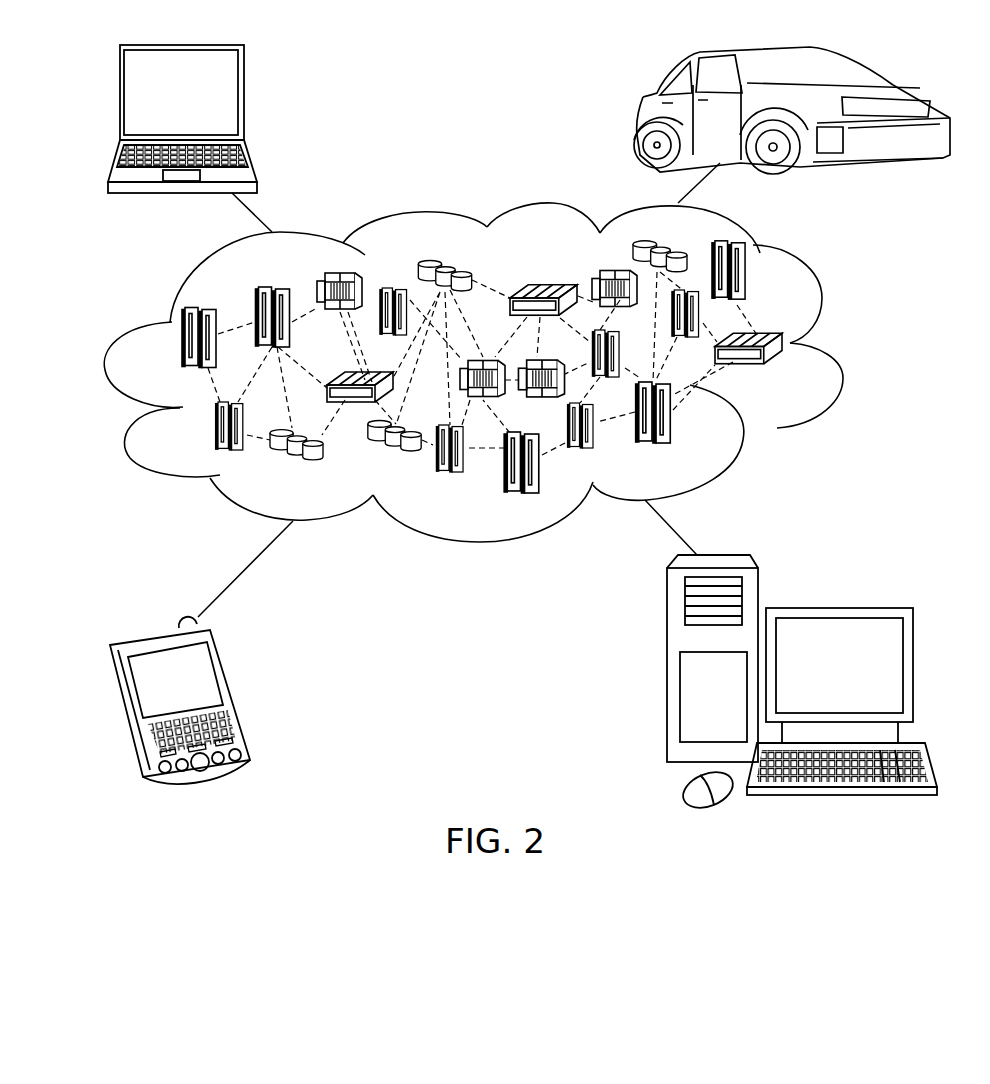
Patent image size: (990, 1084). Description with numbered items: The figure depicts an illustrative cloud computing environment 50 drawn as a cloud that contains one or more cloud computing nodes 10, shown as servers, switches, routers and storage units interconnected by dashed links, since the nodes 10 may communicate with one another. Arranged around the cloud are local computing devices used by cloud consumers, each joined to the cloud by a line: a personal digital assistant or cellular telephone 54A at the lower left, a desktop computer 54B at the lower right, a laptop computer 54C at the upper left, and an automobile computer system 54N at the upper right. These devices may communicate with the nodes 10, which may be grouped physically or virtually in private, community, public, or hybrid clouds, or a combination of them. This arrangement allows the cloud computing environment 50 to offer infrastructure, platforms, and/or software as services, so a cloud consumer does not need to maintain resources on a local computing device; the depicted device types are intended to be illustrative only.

The cloud computing node 10 is at (786, 375).
The cloud computing environment 50 is at (838, 348).
The personal digital assistant or cellular telephone 54A is at (233, 692).
The desktop computer 54B is at (838, 608).
The laptop computer 54C is at (244, 100).
The automobile computer system 54N is at (640, 112).